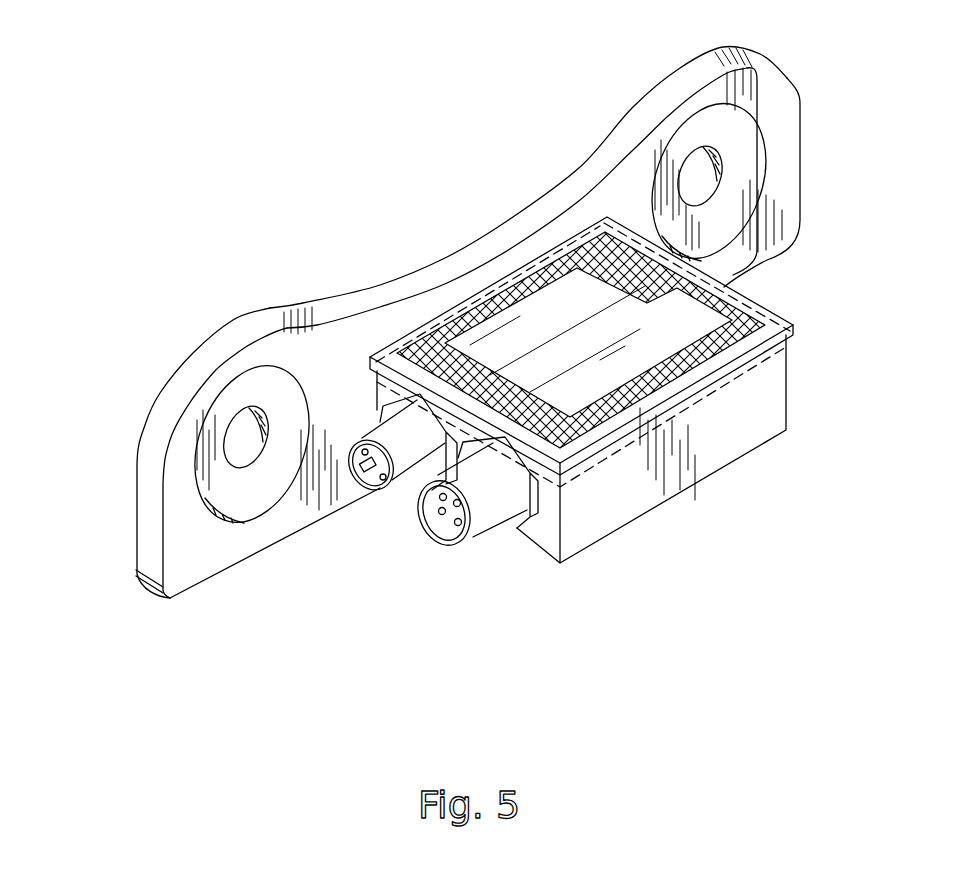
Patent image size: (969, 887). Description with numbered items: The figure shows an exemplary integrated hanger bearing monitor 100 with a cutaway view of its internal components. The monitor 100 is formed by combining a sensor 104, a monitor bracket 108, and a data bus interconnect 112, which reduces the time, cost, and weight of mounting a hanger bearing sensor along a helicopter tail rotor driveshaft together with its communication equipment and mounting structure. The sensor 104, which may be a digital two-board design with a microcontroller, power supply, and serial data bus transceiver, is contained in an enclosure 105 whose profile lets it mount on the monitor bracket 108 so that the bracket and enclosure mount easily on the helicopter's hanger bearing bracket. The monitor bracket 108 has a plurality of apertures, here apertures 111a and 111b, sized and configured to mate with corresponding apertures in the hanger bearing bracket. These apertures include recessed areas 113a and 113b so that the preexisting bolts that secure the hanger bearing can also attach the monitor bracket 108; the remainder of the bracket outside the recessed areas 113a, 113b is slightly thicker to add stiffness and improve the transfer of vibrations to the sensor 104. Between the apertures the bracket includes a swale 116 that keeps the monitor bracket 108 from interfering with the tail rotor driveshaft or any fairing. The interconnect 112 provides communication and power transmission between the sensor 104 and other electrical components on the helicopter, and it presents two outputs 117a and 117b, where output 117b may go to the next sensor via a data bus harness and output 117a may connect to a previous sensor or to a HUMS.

The integrated hanger bearing monitor 100 is at (246, 260).
The sensor 104 is at (722, 303).
The enclosure 105 is at (710, 477).
The monitor bracket 108 is at (130, 515).
The aperture 111a is at (233, 418).
The aperture 111b is at (690, 150).
The data bus interconnect 112 is at (637, 557).
The recessed area 113a is at (270, 395).
The recessed area 113b is at (728, 130).
The swale 116 is at (378, 282).
The output 117a is at (448, 547).
The output 117b is at (380, 492).